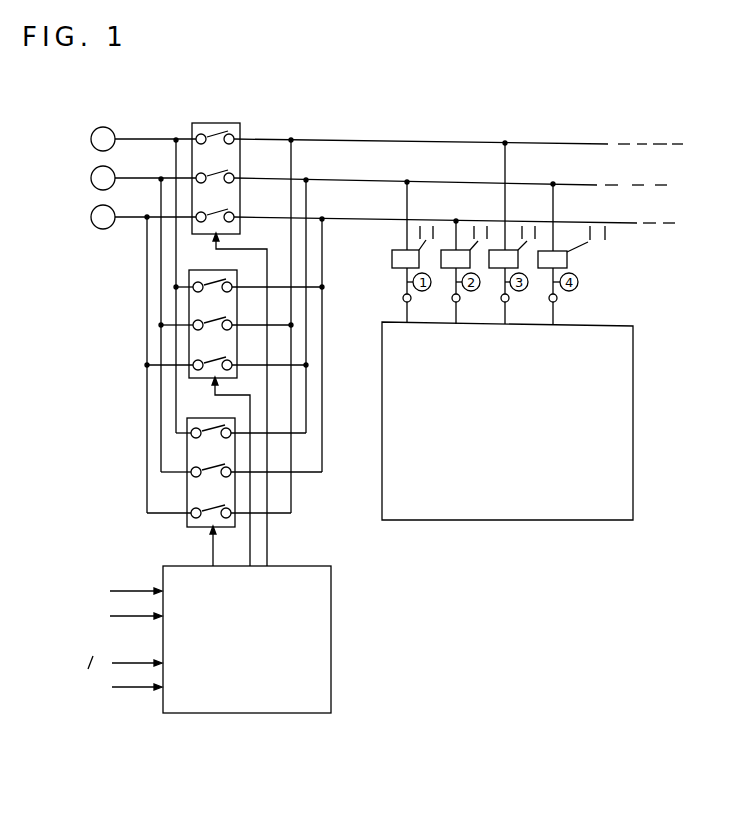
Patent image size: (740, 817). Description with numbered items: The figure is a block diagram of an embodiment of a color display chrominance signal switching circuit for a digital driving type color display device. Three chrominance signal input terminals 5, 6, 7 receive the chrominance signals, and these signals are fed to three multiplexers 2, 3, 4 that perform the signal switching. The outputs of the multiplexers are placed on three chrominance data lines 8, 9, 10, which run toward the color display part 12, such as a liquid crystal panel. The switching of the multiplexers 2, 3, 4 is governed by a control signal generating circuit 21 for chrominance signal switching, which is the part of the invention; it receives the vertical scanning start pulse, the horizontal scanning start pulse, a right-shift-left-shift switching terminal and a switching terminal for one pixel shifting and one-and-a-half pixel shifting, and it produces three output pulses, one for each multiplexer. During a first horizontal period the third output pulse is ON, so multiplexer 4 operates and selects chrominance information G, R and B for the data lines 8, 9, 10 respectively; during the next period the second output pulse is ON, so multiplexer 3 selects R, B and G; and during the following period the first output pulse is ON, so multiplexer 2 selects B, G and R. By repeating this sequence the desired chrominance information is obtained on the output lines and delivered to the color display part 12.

The multiplexer 2 is at (186, 527).
The multiplexer 3 is at (188, 346).
The multiplexer 4 is at (239, 124).
The chrominance signal input terminal 5 is at (89, 134).
The chrominance signal input terminal 6 is at (89, 177).
The chrominance signal input terminal 7 is at (89, 217).
The chrominance data line 8 is at (590, 144).
The chrominance data line 9 is at (584, 185).
The chrominance data line 10 is at (587, 222).
The color display part 12 is at (634, 436).
The control signal generating circuit for chrominance signal switching 21 is at (212, 703).